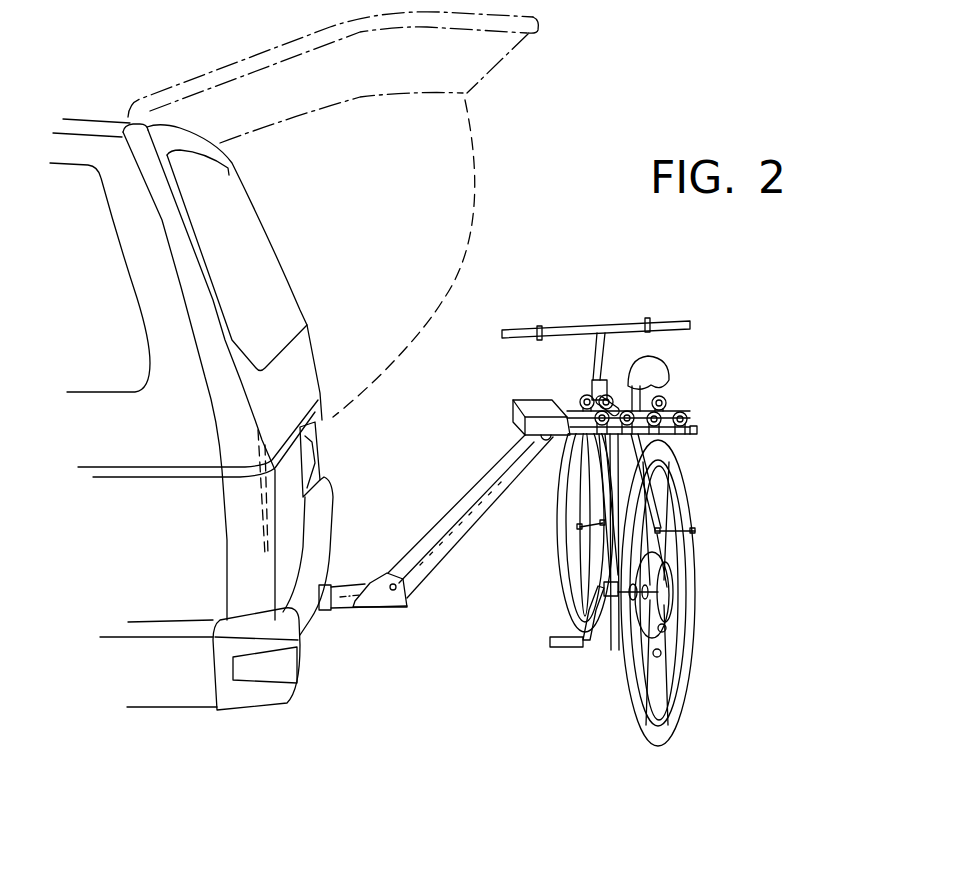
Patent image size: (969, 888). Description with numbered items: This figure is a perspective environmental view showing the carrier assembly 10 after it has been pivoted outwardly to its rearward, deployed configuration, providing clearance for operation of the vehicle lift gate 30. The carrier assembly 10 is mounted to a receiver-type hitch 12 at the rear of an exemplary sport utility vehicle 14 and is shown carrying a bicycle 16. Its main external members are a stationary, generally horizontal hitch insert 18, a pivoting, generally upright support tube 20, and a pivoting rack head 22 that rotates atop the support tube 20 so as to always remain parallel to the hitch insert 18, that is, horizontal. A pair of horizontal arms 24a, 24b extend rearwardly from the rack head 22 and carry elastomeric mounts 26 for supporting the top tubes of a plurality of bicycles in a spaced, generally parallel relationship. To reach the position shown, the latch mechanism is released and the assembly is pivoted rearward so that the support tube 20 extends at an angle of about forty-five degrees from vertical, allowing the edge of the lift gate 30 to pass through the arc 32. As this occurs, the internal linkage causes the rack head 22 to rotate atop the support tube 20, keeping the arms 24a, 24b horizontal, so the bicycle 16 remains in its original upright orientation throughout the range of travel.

The carrier assembly 10 is at (563, 465).
The hitch 12 is at (321, 608).
The sport utility vehicle 14 is at (163, 524).
The bicycle 16 is at (699, 568).
The hitch insert 18 is at (345, 603).
The support tube 20 is at (482, 485).
The rack head 22 is at (523, 398).
The horizontal arm 24a is at (698, 428).
The horizontal arm 24b is at (677, 406).
The elastomeric mounts 26 is at (662, 398).
The vehicle lift gate 30 is at (493, 63).
The arc 32 is at (480, 180).